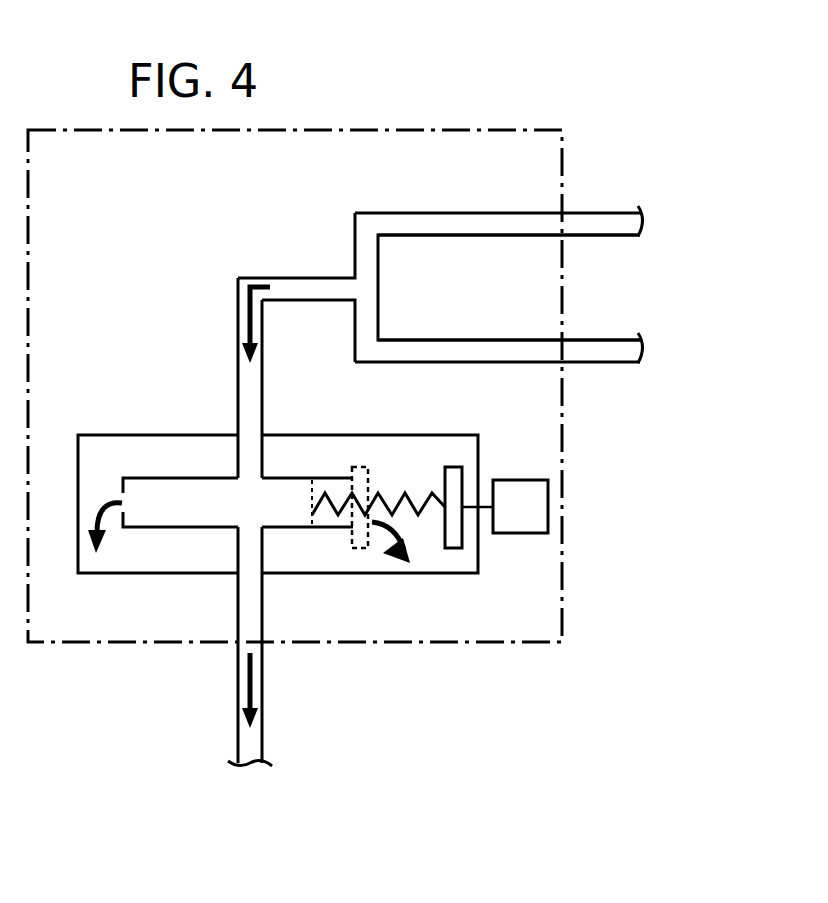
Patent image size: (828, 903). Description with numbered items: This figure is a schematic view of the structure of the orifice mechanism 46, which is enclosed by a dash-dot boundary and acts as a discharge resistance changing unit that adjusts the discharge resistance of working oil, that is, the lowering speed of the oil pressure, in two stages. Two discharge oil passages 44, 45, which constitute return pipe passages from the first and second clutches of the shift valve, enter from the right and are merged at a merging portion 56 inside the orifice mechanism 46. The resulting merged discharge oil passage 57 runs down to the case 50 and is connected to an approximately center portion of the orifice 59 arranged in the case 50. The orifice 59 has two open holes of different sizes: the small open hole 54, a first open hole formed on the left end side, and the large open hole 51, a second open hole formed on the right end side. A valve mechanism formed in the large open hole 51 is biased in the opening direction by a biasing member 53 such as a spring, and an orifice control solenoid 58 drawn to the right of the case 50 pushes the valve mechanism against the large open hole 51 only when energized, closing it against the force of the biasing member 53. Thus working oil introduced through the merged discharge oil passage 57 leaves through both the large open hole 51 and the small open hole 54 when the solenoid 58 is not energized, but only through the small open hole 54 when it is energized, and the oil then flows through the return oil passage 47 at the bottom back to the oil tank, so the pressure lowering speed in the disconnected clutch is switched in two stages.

The discharge oil passage 44 is at (608, 230).
The discharge oil passage 45 is at (612, 352).
The orifice mechanism 46 is at (500, 130).
The return oil passage 47 is at (253, 740).
The case 50 is at (205, 420).
The large open hole 51 is at (380, 491).
The biasing member 53 is at (428, 510).
The small open hole 54 is at (143, 511).
The merging portion 56 is at (365, 288).
The merged discharge oil passage 57 is at (305, 290).
The orifice control solenoid 58 is at (520, 520).
The orifice 59 is at (182, 547).